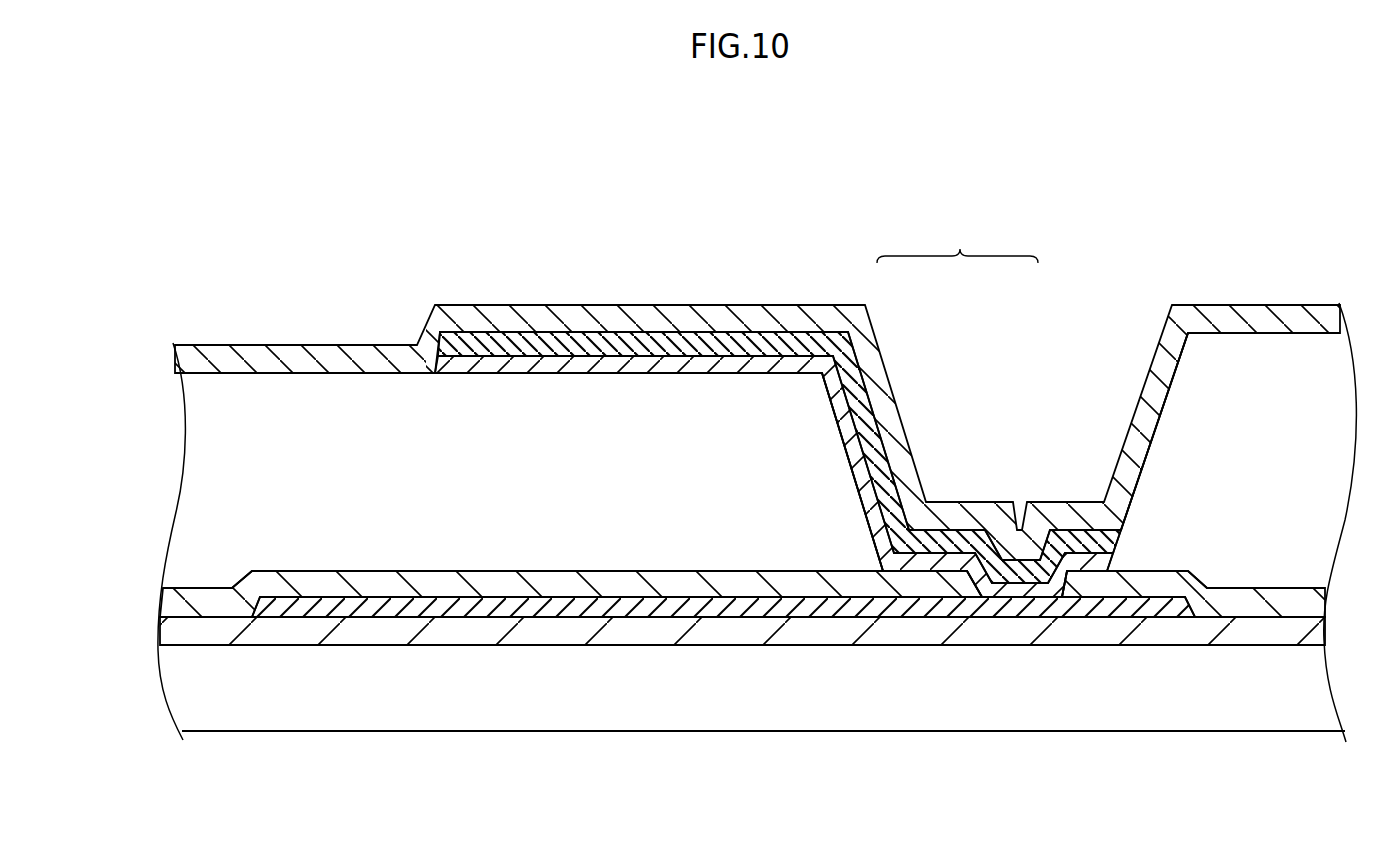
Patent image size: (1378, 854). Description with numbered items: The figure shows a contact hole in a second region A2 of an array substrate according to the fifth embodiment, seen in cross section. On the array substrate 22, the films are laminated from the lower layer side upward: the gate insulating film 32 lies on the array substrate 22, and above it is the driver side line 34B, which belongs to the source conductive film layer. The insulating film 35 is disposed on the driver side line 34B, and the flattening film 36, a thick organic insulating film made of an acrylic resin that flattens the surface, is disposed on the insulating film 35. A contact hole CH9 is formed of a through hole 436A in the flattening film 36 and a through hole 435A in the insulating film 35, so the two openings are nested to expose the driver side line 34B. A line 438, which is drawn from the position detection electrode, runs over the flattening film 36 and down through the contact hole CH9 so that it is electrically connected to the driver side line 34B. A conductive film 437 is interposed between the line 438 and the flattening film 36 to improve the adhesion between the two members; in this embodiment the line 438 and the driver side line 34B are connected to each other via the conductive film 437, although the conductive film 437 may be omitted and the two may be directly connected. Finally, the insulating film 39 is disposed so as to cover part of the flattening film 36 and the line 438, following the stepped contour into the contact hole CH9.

The region A2 is at (271, 156).
The array substrate 22 is at (283, 705).
The gate insulating film 32 is at (168, 633).
The driver side line 34B is at (568, 606).
The insulating film 35 is at (167, 600).
The flattening film 36 is at (212, 515).
The insulating film 39 is at (227, 363).
The conductive film 437 is at (716, 366).
The line 438 is at (640, 327).
The contact hole CH9 is at (957, 236).
The through hole 436A is at (850, 430).
The through hole 435A is at (1018, 520).